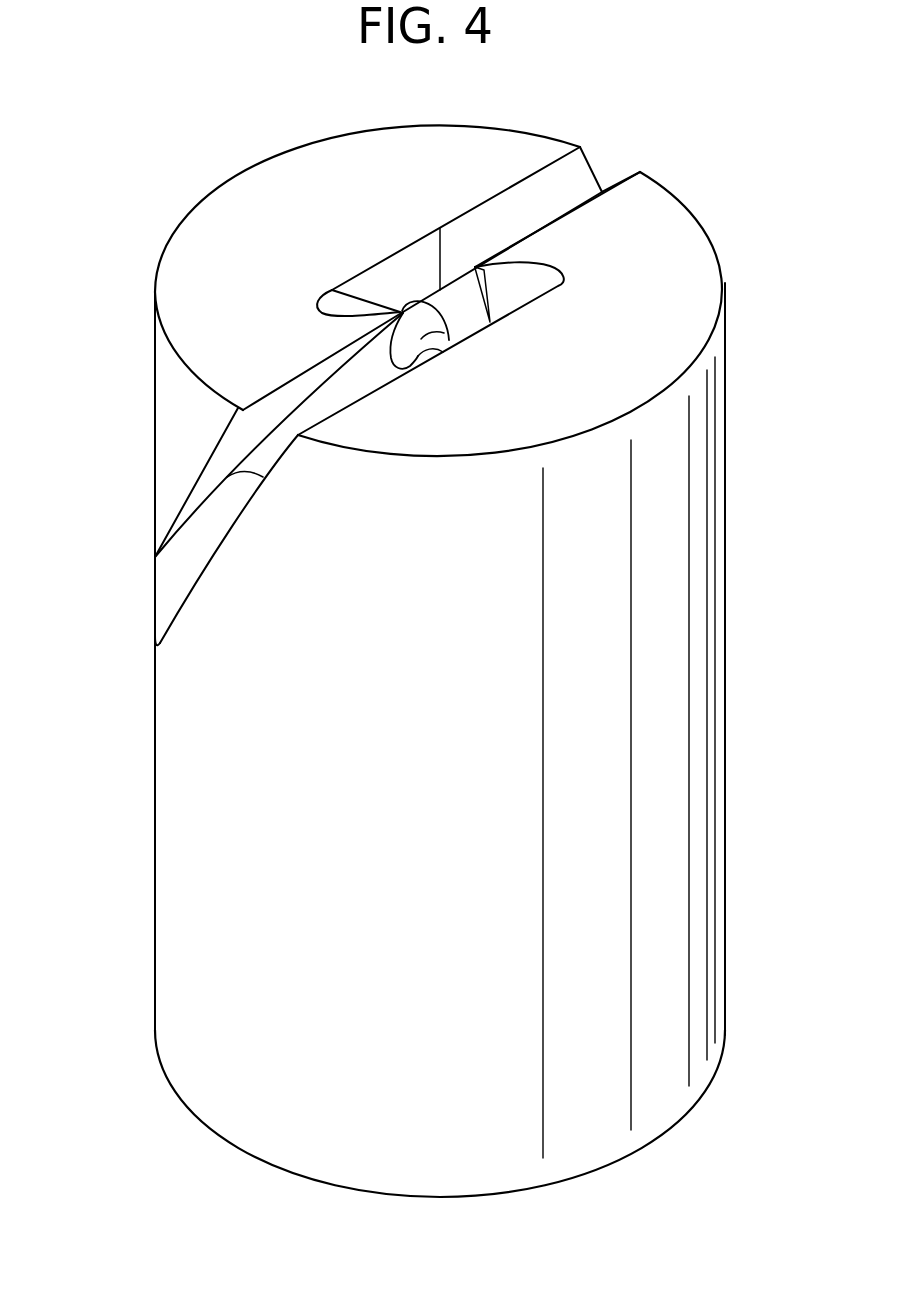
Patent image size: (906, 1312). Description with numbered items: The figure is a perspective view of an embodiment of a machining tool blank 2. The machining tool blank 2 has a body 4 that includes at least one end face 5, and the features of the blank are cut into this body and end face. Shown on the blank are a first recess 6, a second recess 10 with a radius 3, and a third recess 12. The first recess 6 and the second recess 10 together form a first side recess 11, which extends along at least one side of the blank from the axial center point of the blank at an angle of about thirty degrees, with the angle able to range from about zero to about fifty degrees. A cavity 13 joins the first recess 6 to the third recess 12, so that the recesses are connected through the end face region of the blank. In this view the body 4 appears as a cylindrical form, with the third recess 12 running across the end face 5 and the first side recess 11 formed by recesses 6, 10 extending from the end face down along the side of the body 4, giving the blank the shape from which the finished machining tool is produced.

The machining tool blank 2 is at (690, 182).
The radius 3 is at (235, 486).
The body 4 is at (700, 665).
The end face 5 is at (255, 196).
The first recess 6 is at (317, 387).
The second recess 10 is at (203, 535).
The first side recess 11 is at (160, 616).
The third recess 12 is at (488, 230).
The cavity 13 is at (449, 340).